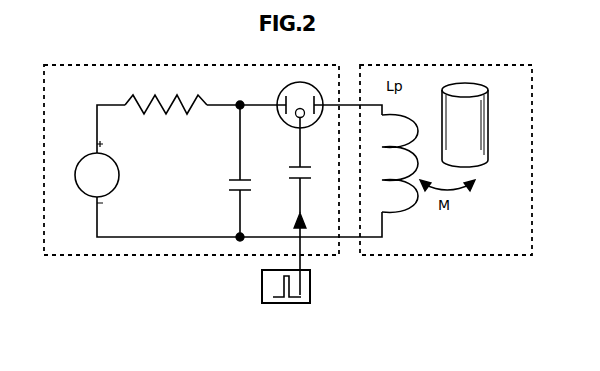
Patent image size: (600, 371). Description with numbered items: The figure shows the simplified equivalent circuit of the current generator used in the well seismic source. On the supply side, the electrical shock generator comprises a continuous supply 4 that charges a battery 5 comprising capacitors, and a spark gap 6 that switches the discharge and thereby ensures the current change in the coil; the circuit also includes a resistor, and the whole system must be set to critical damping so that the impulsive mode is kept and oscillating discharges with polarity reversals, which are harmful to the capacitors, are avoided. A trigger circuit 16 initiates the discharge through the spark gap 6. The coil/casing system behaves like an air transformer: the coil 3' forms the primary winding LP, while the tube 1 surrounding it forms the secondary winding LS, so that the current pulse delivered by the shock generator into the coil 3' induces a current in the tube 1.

The tube 1 is at (489, 147).
The coil 3' is at (407, 178).
The continuous supply 4 is at (119, 164).
The battery comprising capacitors 5 is at (232, 189).
The spark gap 6 is at (289, 85).
The trigger circuit 16 is at (261, 282).